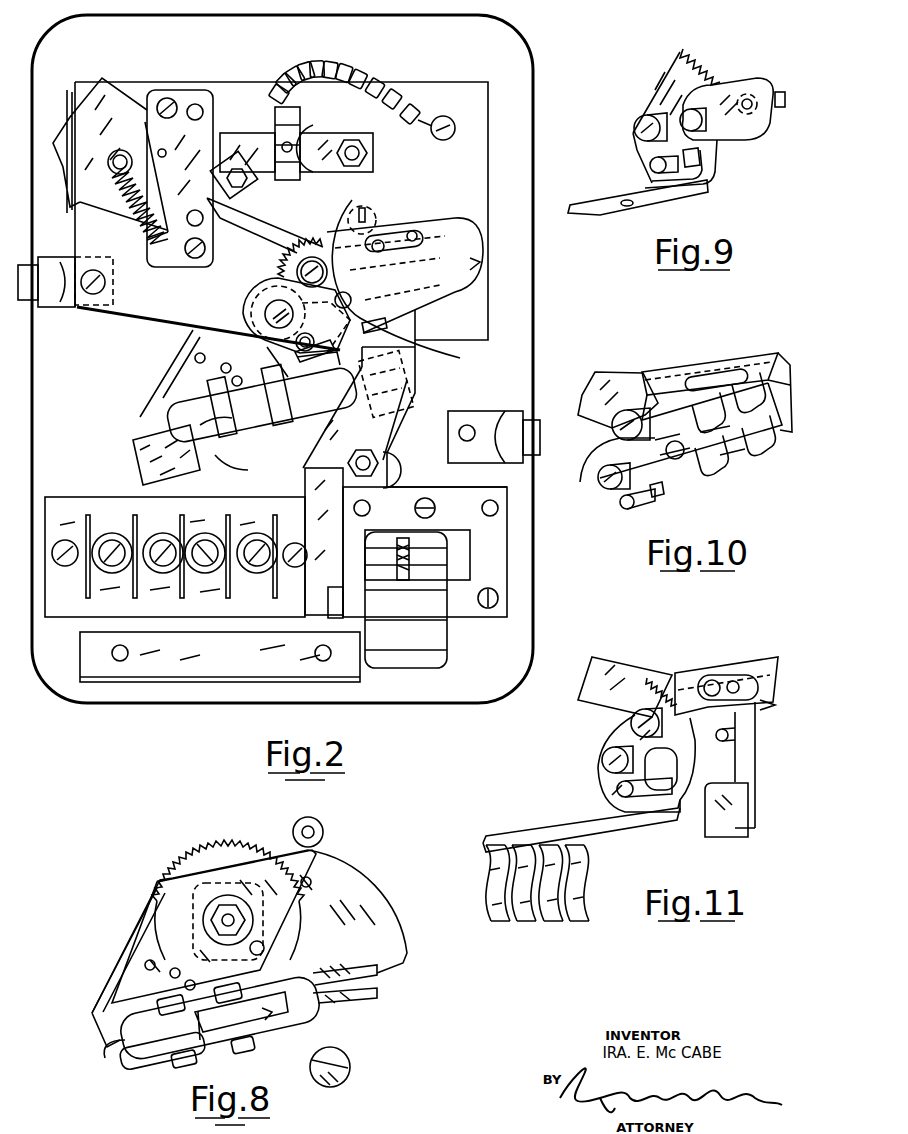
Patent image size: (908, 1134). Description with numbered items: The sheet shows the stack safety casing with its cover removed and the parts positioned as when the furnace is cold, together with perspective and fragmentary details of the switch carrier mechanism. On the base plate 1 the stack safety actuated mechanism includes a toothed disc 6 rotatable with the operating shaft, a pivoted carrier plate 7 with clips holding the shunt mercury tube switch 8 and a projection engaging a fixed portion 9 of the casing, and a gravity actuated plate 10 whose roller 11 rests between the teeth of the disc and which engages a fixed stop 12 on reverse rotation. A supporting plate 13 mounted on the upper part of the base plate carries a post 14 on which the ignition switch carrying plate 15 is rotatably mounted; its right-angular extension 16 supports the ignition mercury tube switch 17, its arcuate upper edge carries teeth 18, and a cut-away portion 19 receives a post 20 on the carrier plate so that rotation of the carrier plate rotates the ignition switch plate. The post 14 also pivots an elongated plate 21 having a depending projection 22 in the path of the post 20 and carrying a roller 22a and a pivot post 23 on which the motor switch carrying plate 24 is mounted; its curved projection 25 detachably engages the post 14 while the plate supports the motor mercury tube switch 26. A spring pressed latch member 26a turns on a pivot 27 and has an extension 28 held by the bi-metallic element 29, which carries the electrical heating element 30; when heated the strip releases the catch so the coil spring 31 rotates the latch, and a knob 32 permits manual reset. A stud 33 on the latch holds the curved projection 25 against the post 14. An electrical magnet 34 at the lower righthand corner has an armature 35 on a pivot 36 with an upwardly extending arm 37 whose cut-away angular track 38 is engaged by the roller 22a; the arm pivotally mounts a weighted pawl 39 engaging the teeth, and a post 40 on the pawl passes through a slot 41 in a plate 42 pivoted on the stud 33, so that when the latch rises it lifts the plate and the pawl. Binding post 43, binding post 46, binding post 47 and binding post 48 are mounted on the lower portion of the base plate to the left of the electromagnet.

In FIG. 2, the base plate 1 is at (520, 602).
In FIG. 8, the toothed disc 6 is at (208, 850).
In FIG. 8, the pivoted carrier plate 7 is at (175, 902).
In FIG. 2, the mercury tube switch 8 is at (405, 428).
In FIG. 8, the mercury tube switch 8 is at (122, 1058).
In FIG. 2, the fixed portion of the casing 9 is at (377, 204).
In FIG. 8, the fixed portion of the casing 9 is at (322, 824).
In FIG. 8, the gravity actuated plate 10 is at (372, 935).
In FIG. 8, the roller 11 is at (170, 970).
In FIG. 2, the fixed stop 12 is at (400, 459).
In FIG. 8, the fixed stop 12 is at (342, 1054).
In FIG. 2, the supporting plate 13 is at (475, 136).
In FIG. 2, the post 14 is at (266, 316).
In FIG. 9, the post 14 is at (638, 127).
In FIG. 10, the post 14 is at (605, 478).
In FIG. 11, the post 14 is at (603, 758).
In FIG. 9, the switch carrying plate 15 is at (670, 83).
In FIG. 11, the switch carrying plate 15 is at (617, 793).
In FIG. 9, the right-angular extension 16 is at (655, 200).
In FIG. 11, the right-angular extension 16 is at (620, 822).
In FIG. 2, the mercury tube switch 17 is at (172, 397).
In FIG. 9, the teeth 18 is at (700, 70).
In FIG. 9, the cut-away portion 19 is at (714, 180).
In FIG. 11, the cut-away portion 19 is at (677, 765).
In FIG. 2, the post 20 is at (445, 358).
In FIG. 9, the post 20 is at (652, 166).
In FIG. 10, the post 20 is at (627, 505).
In FIG. 11, the post 20 is at (618, 787).
In FIG. 8, the post 20 is at (262, 946).
In FIG. 9, the elongated plate 21 is at (737, 90).
In FIG. 9, the depending projection 22 is at (700, 156).
In FIG. 10, the depending projection 22 is at (658, 494).
In FIG. 2, the roller 22a is at (420, 317).
In FIG. 9, the roller 22a is at (780, 108).
In FIG. 11, the roller 22a is at (728, 763).
In FIG. 2, the pivot post 23 is at (318, 262).
In FIG. 9, the pivot post 23 is at (697, 117).
In FIG. 10, the pivot post 23 is at (679, 454).
In FIG. 10, the switch carrying plate 24 is at (762, 417).
In FIG. 2, the curved projection 25 is at (250, 298).
In FIG. 10, the curved projection 25 is at (593, 457).
In FIG. 2, the mercury tube switch 26 is at (460, 240).
In FIG. 2, the spring pressed latch member 26a is at (247, 218).
In FIG. 10, the spring pressed latch member 26a is at (598, 395).
In FIG. 11, the spring pressed latch member 26a is at (613, 675).
In FIG. 2, the pivot 27 is at (160, 150).
In FIG. 2, the extension 28 is at (218, 165).
In FIG. 2, the bi-metallic element 29 is at (245, 148).
In FIG. 2, the electrical heating element 30 is at (307, 145).
In FIG. 2, the coil spring 31 is at (130, 223).
In FIG. 2, the knob 32 is at (68, 126).
In FIG. 2, the stud 33 is at (297, 272).
In FIG. 10, the stud 33 is at (612, 433).
In FIG. 11, the stud 33 is at (632, 727).
In FIG. 2, the electrical magnet 34 is at (423, 625).
In FIG. 2, the armature 35 is at (320, 578).
In FIG. 2, the pivot 36 is at (370, 465).
In FIG. 2, the arm 37 is at (410, 383).
In FIG. 11, the arm 37 is at (733, 820).
In FIG. 2, the cut-away angular track 38 is at (395, 337).
In FIG. 11, the cut-away angular track 38 is at (728, 777).
In FIG. 2, the weighted pawl 39 is at (482, 267).
In FIG. 11, the weighted pawl 39 is at (763, 705).
In FIG. 2, the post 40 is at (413, 240).
In FIG. 11, the post 40 is at (727, 688).
In FIG. 10, the slot 41 is at (705, 380).
In FIG. 11, the slot 41 is at (708, 687).
In FIG. 10, the plate 42 is at (668, 368).
In FIG. 11, the plate 42 is at (687, 676).
In FIG. 2, the binding post 43 is at (111, 533).
In FIG. 2, the binding post 46 is at (257, 533).
In FIG. 2, the binding post 47 is at (205, 533).
In FIG. 2, the binding post 48 is at (163, 533).